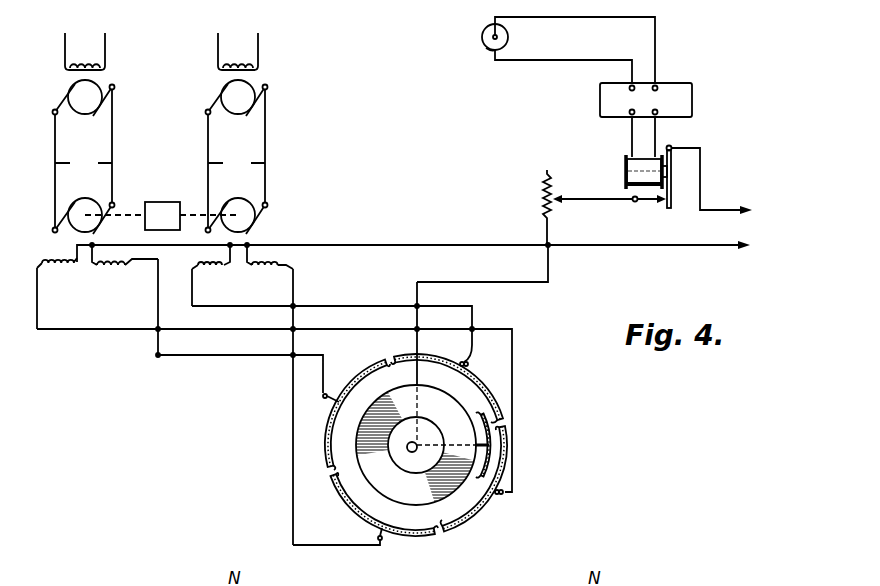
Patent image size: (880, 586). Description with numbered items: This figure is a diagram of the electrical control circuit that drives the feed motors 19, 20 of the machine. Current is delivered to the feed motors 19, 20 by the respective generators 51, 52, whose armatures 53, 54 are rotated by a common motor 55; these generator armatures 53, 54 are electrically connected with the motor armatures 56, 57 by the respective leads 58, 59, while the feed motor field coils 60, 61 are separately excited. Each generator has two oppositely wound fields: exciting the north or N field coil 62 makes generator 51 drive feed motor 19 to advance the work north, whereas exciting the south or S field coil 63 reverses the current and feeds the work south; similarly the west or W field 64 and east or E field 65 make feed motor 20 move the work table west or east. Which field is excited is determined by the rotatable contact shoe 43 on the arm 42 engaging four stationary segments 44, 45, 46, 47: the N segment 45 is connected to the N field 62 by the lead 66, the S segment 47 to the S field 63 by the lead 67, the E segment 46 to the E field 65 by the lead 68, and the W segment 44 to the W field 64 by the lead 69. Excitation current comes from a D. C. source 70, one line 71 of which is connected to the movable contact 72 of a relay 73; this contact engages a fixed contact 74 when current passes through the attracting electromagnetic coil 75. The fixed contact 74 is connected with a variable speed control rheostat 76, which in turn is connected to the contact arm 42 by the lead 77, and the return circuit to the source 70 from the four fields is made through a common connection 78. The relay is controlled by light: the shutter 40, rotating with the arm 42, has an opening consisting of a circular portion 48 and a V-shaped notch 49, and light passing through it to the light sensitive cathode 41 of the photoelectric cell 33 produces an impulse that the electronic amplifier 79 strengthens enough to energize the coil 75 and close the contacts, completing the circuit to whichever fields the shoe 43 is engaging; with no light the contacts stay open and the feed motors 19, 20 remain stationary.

The feed motor 19 is at (107, 81).
The feed motor 20 is at (260, 81).
The photoelectric cell 33 is at (482, 40).
The shutter 40 is at (420, 506).
The light sensitive cathode 41 is at (487, 50).
The arm 42 is at (480, 447).
The contact shoe 43 is at (483, 412).
The west segment 44 is at (460, 363).
The north segment 45 is at (487, 502).
The east segment 46 is at (368, 520).
The south segment 47 is at (360, 377).
The circular portion 48 is at (398, 464).
The V-shaped notch 49 is at (440, 442).
The generator 51 is at (60, 245).
The generator 52 is at (259, 238).
The generator armature 53 is at (88, 205).
The generator armature 54 is at (238, 205).
The common motor 55 is at (163, 202).
The motor armature 56 is at (83, 112).
The motor armature 57 is at (236, 112).
The lead 58 is at (83, 159).
The lead 59 is at (236, 159).
The feed motor field coil 60 is at (80, 64).
The feed motor field coil 61 is at (233, 64).
The north generator field coil 62 is at (74, 270).
The south generator field coil 63 is at (128, 270).
The west generator field 64 is at (223, 270).
The east generator field 65 is at (279, 270).
The lead 66 is at (38, 315).
The lead 67 is at (159, 287).
The lead 68 is at (294, 288).
The lead 69 is at (191, 289).
The D. C. source 70 is at (761, 218).
The line 71 is at (703, 200).
The movable contact 72 is at (672, 196).
The relay 73 is at (674, 145).
The fixed contact 74 is at (662, 204).
The electromagnetic coil 75 is at (630, 172).
The variable speed control rheostat 76 is at (543, 216).
The lead 77 is at (521, 281).
The common connection 78 is at (425, 244).
The electronic amplifier 79 is at (691, 83).